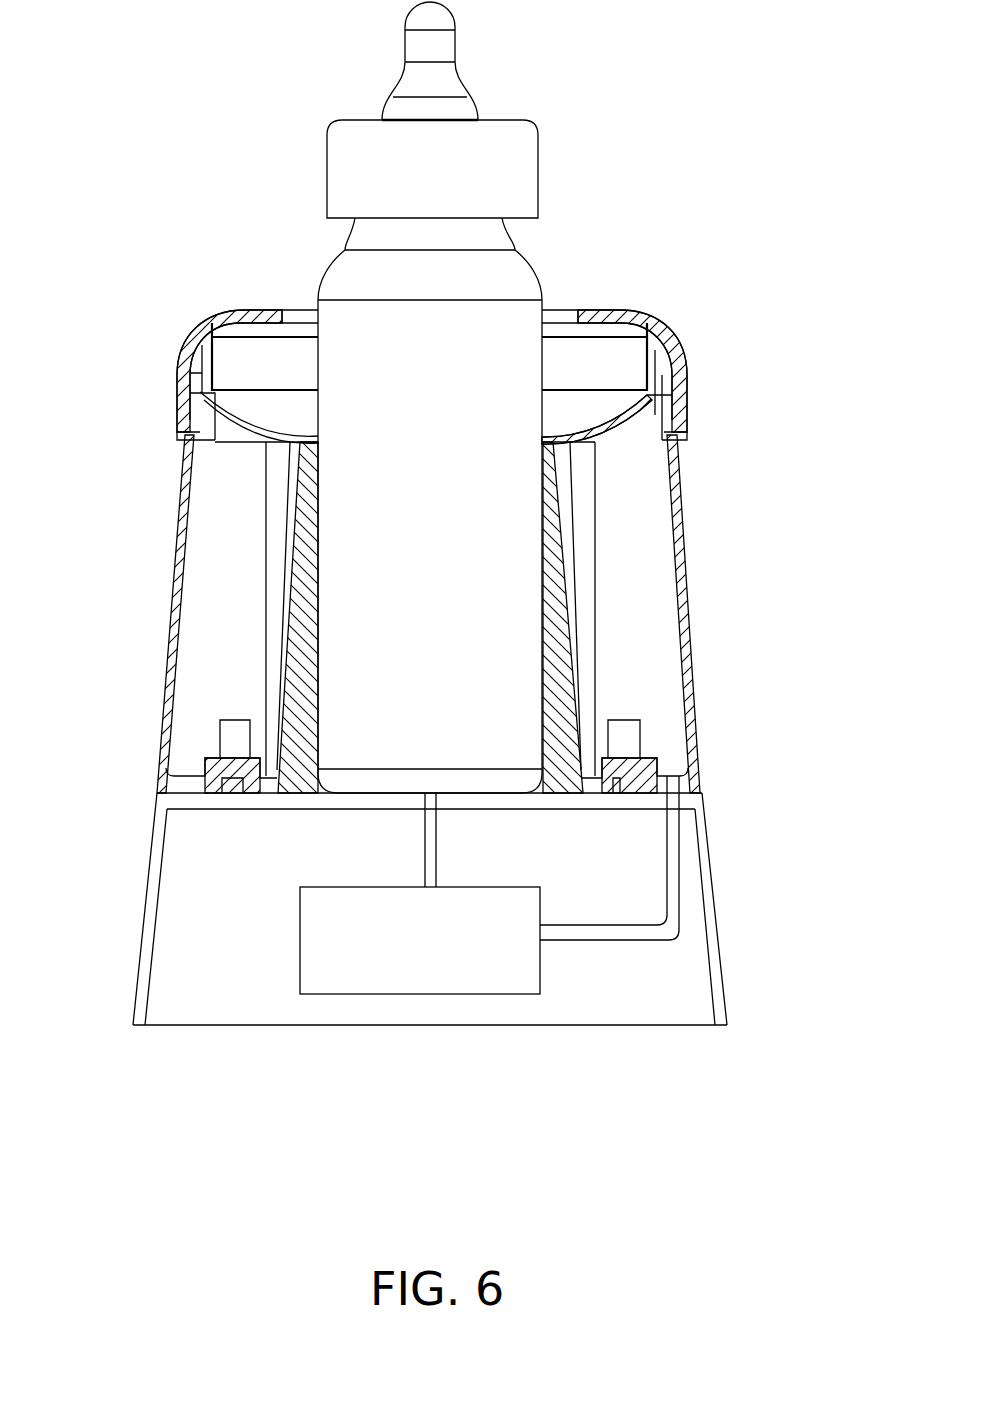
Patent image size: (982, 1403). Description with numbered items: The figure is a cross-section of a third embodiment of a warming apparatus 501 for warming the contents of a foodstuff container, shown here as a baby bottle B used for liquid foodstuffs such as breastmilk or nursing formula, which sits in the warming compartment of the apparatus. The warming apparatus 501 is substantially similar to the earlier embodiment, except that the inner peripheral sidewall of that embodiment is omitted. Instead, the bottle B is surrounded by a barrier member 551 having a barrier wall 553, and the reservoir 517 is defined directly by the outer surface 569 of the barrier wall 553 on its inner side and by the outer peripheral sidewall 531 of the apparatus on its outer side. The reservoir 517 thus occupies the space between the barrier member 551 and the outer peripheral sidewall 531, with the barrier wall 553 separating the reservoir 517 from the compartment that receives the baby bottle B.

The warming apparatus 501 is at (203, 253).
The baby bottle B is at (538, 143).
The outer peripheral sidewall 531 is at (685, 551).
The outer surface 569 is at (264, 600).
The barrier member 551 is at (597, 498).
The barrier wall 553 is at (583, 680).
The reservoir 517 is at (657, 593).